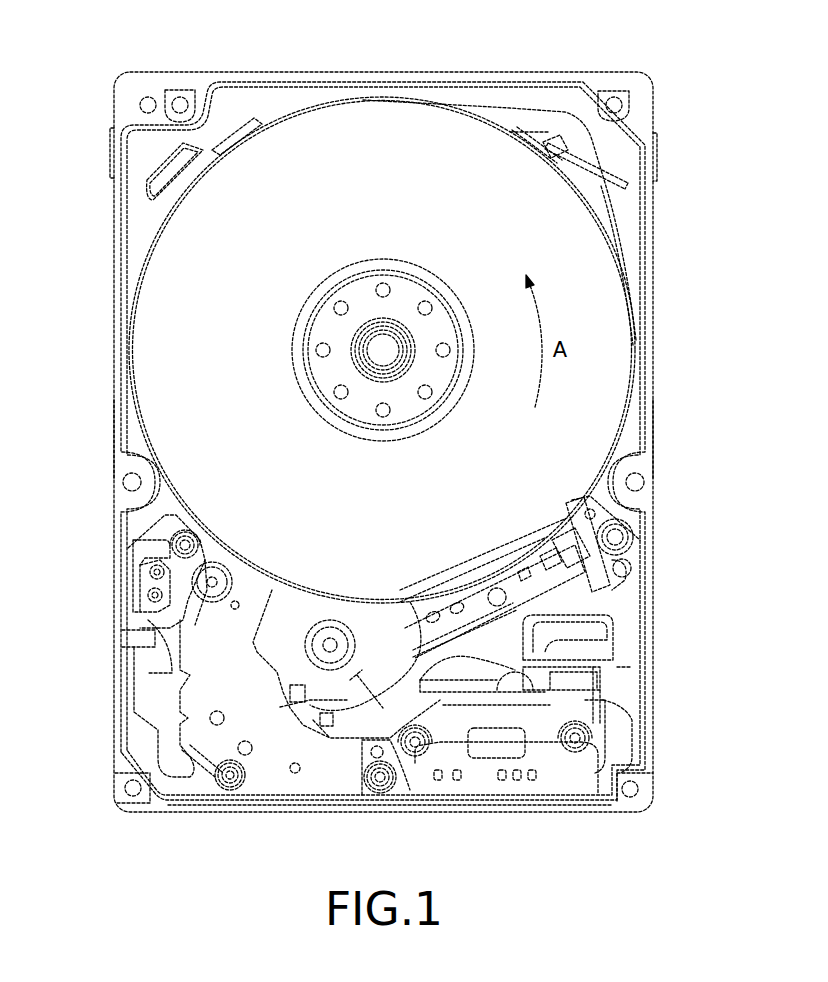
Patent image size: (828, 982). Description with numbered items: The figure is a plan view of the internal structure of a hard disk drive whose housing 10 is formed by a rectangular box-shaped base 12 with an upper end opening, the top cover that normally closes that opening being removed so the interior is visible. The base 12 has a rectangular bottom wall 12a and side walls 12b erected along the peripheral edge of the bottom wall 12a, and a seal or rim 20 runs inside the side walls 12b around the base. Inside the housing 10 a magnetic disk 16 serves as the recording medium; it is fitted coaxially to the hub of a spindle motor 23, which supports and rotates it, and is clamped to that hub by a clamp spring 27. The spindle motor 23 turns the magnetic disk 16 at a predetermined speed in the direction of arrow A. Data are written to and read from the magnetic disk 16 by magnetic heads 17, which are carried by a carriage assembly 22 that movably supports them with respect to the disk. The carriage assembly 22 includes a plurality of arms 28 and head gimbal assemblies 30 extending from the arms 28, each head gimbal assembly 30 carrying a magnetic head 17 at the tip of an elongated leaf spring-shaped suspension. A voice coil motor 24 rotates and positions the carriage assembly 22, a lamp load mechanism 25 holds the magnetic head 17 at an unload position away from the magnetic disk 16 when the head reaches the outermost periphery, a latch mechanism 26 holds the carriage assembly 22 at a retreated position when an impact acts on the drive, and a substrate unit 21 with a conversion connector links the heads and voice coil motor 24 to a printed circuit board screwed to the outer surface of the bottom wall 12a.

The housing 10 is at (385, 71).
The base 12 is at (655, 273).
The bottom wall 12a is at (618, 669).
The side walls 12b is at (275, 70).
The magnetic disk 16 is at (175, 278).
The magnetic head 17 is at (547, 556).
The gasket 20 is at (509, 86).
The substrate unit 21 is at (548, 745).
The carriage assembly 22 is at (423, 597).
The spindle motor 23 is at (400, 344).
The voice coil motor 24 is at (313, 747).
The lamp load mechanism 25 is at (627, 550).
The latch mechanism 26 is at (138, 607).
The clamp spring 27 is at (300, 356).
The arms 28 is at (452, 597).
The head gimbal assemblies 30 is at (543, 572).